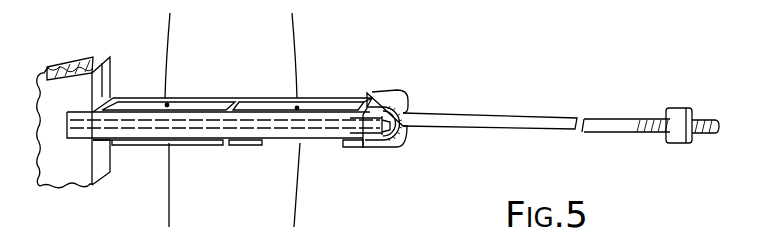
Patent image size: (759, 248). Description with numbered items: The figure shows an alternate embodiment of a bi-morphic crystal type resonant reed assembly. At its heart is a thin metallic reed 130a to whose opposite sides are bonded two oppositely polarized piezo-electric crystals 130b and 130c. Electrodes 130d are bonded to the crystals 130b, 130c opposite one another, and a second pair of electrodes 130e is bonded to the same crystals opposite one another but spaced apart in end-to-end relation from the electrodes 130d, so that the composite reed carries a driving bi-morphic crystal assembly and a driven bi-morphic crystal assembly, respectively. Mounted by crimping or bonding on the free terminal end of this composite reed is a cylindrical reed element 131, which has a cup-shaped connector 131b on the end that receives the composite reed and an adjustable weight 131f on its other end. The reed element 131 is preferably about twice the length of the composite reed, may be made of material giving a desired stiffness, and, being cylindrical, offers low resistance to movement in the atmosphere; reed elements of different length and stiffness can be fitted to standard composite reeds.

The thin metallic reed 130a is at (334, 139).
The piezo-electric crystal 130b is at (255, 99).
The piezo-electric crystal 130c is at (264, 142).
The electrodes 130d is at (202, 100).
The electrodes 130e is at (317, 101).
The cylindrical reed element 131 is at (508, 113).
The cup-shaped connector 131b is at (384, 92).
The adjustable weight 131f is at (680, 107).